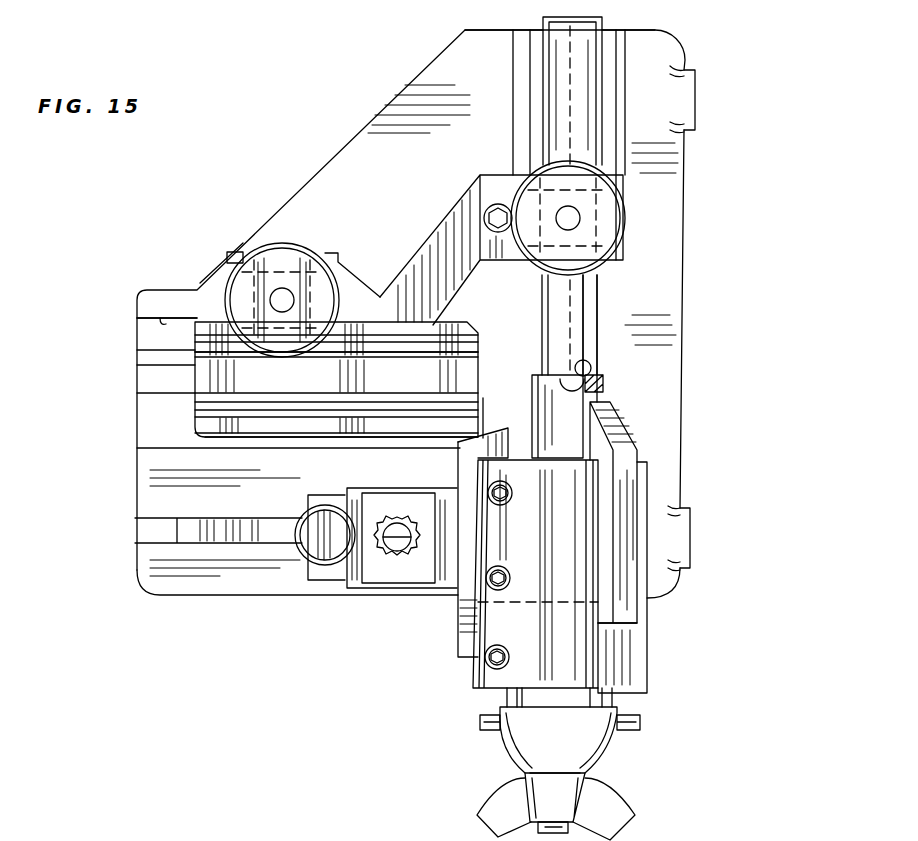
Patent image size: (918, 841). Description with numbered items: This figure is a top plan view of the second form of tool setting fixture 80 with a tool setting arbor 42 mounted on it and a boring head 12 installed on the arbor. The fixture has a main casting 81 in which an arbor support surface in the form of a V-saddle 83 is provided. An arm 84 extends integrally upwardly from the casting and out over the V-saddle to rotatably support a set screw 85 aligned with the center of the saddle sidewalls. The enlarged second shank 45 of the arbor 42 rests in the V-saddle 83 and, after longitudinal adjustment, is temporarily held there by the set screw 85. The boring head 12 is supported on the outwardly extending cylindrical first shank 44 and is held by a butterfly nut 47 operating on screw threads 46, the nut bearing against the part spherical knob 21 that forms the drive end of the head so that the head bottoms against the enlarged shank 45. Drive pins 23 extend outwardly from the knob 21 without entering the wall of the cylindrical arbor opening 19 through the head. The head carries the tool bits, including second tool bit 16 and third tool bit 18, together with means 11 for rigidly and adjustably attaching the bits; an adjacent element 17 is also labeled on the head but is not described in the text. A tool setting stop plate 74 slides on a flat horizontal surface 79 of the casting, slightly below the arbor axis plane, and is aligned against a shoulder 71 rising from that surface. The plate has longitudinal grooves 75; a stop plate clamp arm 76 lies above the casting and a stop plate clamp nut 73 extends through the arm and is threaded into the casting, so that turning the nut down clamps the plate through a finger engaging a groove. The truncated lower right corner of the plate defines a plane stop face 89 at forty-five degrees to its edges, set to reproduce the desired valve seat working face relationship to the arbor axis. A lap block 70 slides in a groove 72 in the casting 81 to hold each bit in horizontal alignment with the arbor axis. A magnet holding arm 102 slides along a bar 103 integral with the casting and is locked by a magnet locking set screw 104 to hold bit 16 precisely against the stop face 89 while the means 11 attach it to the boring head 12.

The means for rigidly and adjustably attaching the tool bits 11 is at (510, 502).
The boring head 12 is at (645, 650).
The second tool bit 16 is at (458, 638).
The block 17 is at (519, 420).
The third tool bit 18 is at (623, 467).
The arbor opening 19 is at (585, 362).
The part spherical knob 21 is at (583, 745).
The drive pins 23 is at (640, 725).
The tool setting arbor 42 is at (575, 327).
The first shank 44 is at (575, 390).
The second shank 45 is at (572, 297).
The screw threads 46 is at (520, 840).
The butterfly nut 47 is at (618, 822).
The lap block 70 is at (283, 437).
The shoulder 71 is at (163, 322).
The groove 72 is at (158, 422).
The stop plate clamp nut 73 is at (293, 255).
The tool setting stop plate 74 is at (205, 380).
The grooves 75 is at (408, 367).
The tool setting stop plate clamp arm 76 is at (243, 248).
The flat horizontal surface 79 is at (147, 350).
The tool setting fixture 80 is at (226, 250).
The main casting 81 is at (148, 333).
The V-saddle 83 is at (625, 57).
The arm 84 is at (496, 187).
The set screw 85 is at (625, 210).
The plane stop face 89 is at (488, 435).
The holding arm 102 is at (393, 570).
The bar 103 is at (268, 533).
The magnet locking set screw 104 is at (312, 525).